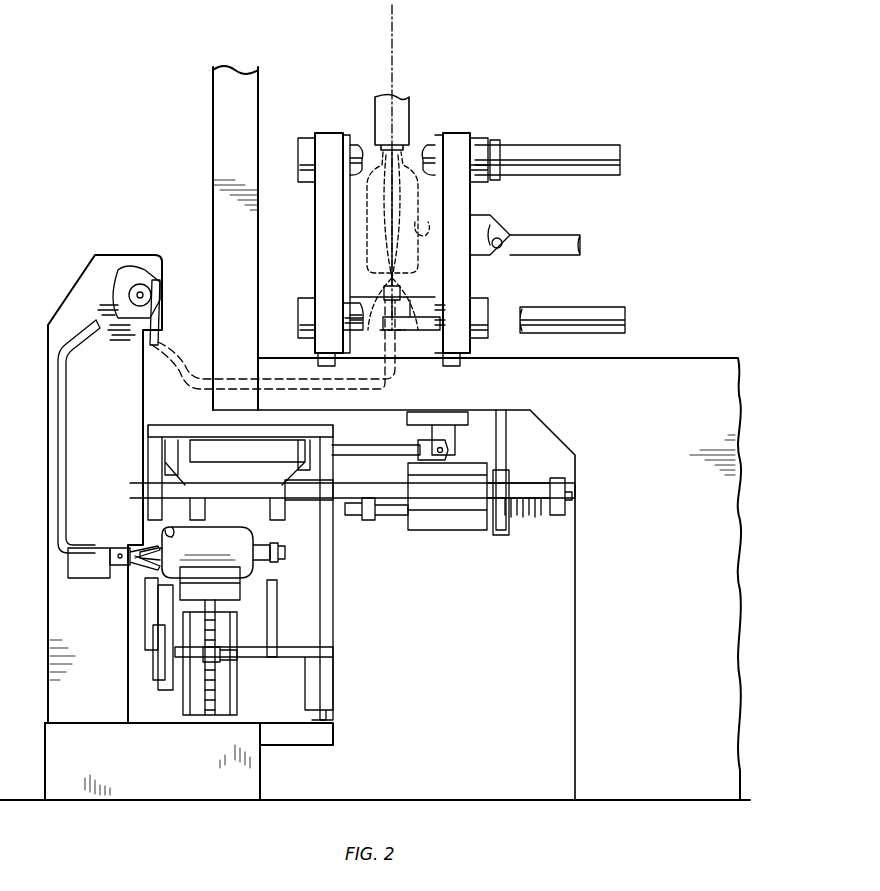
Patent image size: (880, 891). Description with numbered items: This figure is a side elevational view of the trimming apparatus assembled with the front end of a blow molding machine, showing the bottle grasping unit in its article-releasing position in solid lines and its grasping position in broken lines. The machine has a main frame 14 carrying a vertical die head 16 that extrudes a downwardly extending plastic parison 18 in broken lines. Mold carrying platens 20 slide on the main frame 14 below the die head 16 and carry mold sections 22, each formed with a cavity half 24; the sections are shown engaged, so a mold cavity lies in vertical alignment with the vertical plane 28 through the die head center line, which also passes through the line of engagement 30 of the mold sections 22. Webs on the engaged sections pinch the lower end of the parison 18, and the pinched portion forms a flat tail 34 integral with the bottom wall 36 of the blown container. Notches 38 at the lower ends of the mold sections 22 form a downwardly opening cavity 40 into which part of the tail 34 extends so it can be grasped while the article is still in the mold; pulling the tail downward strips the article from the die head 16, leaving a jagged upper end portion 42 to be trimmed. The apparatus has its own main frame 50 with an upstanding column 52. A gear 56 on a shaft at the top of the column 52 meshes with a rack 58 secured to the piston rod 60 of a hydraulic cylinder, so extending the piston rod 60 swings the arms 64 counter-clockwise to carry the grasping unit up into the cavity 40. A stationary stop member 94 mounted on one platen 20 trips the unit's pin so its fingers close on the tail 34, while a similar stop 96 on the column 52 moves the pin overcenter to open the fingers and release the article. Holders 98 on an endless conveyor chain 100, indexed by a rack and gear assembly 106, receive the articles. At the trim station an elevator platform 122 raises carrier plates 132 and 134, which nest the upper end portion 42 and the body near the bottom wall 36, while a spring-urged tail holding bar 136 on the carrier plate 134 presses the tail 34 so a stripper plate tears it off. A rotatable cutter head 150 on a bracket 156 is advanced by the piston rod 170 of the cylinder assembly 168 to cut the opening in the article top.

The main frame 14 is at (702, 362).
The die head 16 is at (405, 108).
The parison 18 is at (405, 195).
The mold carrying platen 20 is at (325, 133).
The mold section 22 is at (355, 262).
The cavity half 24 is at (428, 232).
The vertical plane 28 is at (397, 35).
The line of engagement 30 is at (393, 205).
The tail 34 is at (172, 562).
The bottom wall 36 is at (170, 528).
The notch 38 is at (437, 303).
The downwardly opening cavity 40 is at (425, 330).
The upper end portion 42 is at (280, 545).
The main frame 50 is at (270, 776).
The column 52 is at (102, 479).
The gear 56 is at (125, 295).
The rack 58 is at (160, 290).
The piston rod 60 is at (160, 335).
The arm 64 is at (62, 442).
The stationary stop member 94 is at (420, 325).
The stop 96 is at (110, 582).
The holder 98 is at (240, 598).
The conveyor chain 100 is at (218, 695).
The rack and gear assembly 106 is at (160, 683).
The elevator platform 122 is at (335, 655).
The carrier plate 132 is at (274, 592).
The carrier plate 134 is at (162, 605).
The tail holding bar 136 is at (148, 592).
The cutter head 150 is at (352, 515).
The bracket 156 is at (445, 522).
The cylinder assembly 168 is at (352, 572).
The piston rod 170 is at (390, 440).